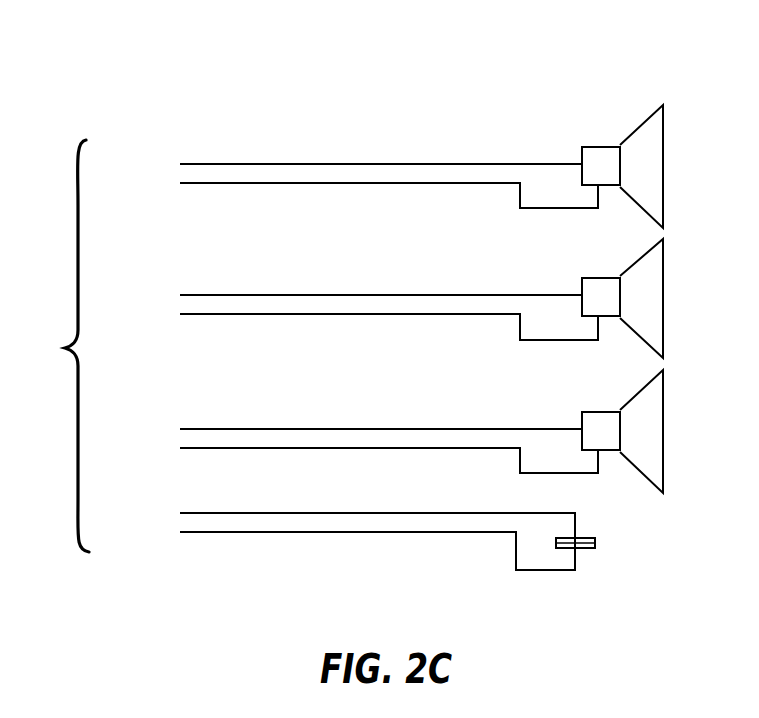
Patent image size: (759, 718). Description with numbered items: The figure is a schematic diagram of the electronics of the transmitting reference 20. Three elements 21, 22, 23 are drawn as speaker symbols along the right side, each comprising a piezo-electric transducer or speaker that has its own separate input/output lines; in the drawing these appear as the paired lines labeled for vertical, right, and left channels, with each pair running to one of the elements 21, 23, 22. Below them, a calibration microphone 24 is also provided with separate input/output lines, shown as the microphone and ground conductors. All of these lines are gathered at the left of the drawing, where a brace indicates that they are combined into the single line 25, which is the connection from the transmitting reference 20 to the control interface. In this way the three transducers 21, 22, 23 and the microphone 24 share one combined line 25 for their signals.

The transmitting reference 20 is at (382, 53).
The piezo-electric transducer 21 is at (643, 124).
The piezo-electric transducer 22 is at (643, 389).
The piezo-electric transducer 23 is at (643, 256).
The calibration microphone 24 is at (587, 537).
The single line 25 is at (103, 346).